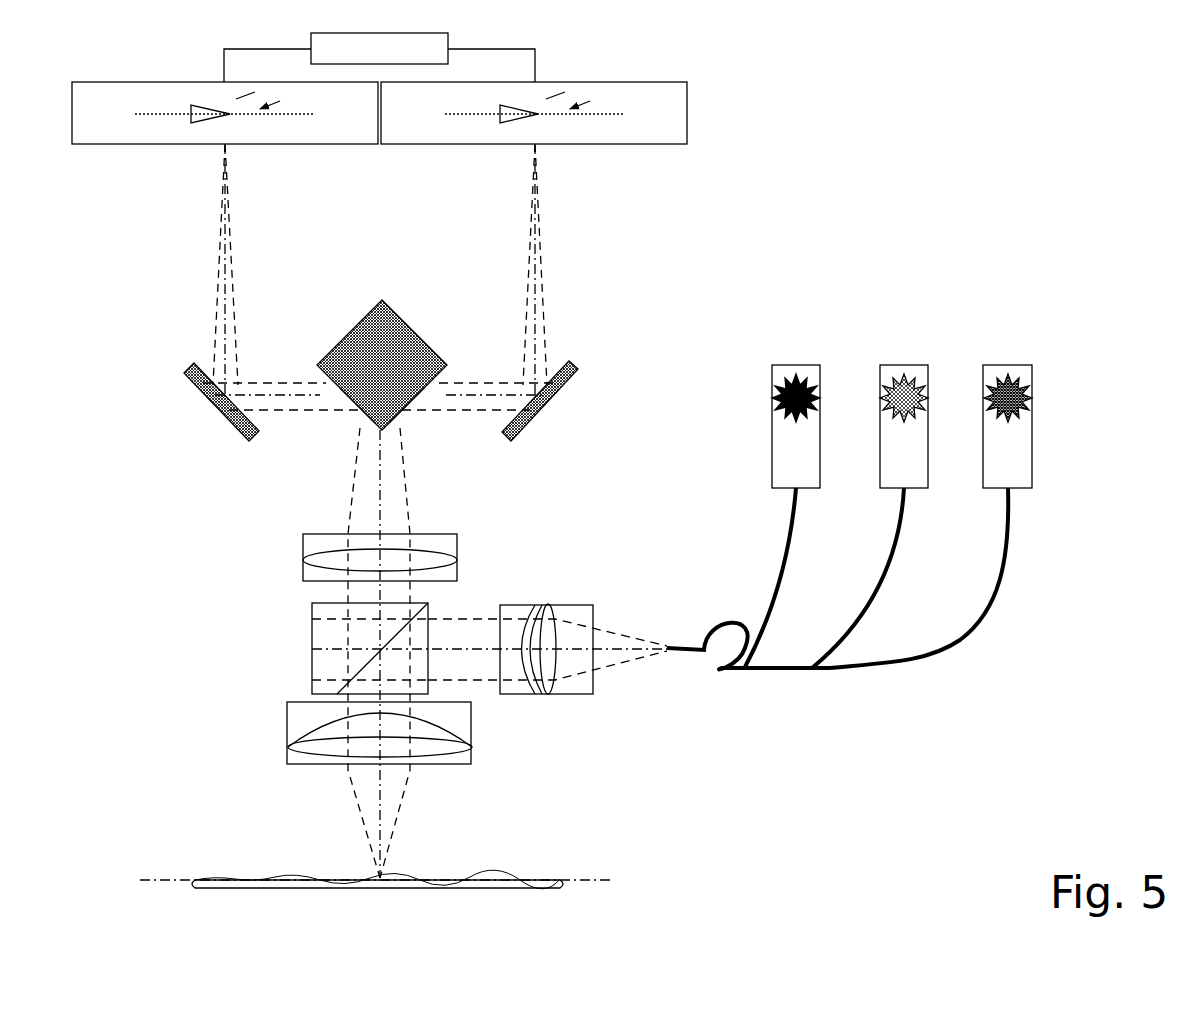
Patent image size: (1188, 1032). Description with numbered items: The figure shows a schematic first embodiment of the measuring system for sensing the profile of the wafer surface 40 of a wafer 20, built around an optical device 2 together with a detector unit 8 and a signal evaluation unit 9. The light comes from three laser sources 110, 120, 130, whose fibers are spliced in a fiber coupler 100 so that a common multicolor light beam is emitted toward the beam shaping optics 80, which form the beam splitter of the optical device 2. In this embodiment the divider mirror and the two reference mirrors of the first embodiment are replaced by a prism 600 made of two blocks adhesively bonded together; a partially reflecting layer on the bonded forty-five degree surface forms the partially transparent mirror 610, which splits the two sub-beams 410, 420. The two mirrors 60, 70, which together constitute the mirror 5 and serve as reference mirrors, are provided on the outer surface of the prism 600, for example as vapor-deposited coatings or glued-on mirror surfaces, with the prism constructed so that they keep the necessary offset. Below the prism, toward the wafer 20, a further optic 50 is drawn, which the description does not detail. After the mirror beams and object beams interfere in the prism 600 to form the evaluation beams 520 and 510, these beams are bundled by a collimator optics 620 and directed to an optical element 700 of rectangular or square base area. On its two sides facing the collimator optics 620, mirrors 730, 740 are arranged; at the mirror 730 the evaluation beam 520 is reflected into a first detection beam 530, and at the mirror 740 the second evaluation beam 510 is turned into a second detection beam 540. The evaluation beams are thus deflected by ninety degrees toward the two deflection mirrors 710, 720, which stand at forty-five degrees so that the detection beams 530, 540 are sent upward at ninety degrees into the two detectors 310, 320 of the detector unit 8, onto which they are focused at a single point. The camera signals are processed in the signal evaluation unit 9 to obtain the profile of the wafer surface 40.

The optical device 2 is at (408, 653).
The mirror 5 is at (433, 606).
The detector unit 8 is at (857, 451).
The signal evaluation unit 9 is at (407, 48).
The wafer 20 is at (417, 888).
The wafer surface 40 is at (502, 880).
The focusing lens 50 is at (472, 756).
The mirror 60 is at (310, 676).
The mirror 70 is at (312, 619).
The beam shaping optics 80 is at (561, 695).
The fiber coupler 100 is at (697, 640).
The laser source 110 is at (800, 365).
The laser source 120 is at (908, 365).
The laser source 130 is at (1015, 365).
The first detector 310 is at (606, 150).
The second detector 320 is at (124, 145).
The sub-beam 410 is at (467, 628).
The sub-beam 420 is at (473, 673).
The evaluation beam 510 is at (392, 490).
The evaluation beam 520 is at (355, 483).
The first detection beam 530 is at (308, 392).
The second detection beam 540 is at (472, 387).
The prism 600 is at (425, 618).
The partially transparent mirror 610 is at (430, 623).
The collimator optics 620 is at (420, 542).
The optical element 700 is at (380, 318).
The deflection mirror 710 is at (537, 420).
The deflection mirror 720 is at (210, 397).
The mirror 730 is at (355, 408).
The mirror 740 is at (400, 412).